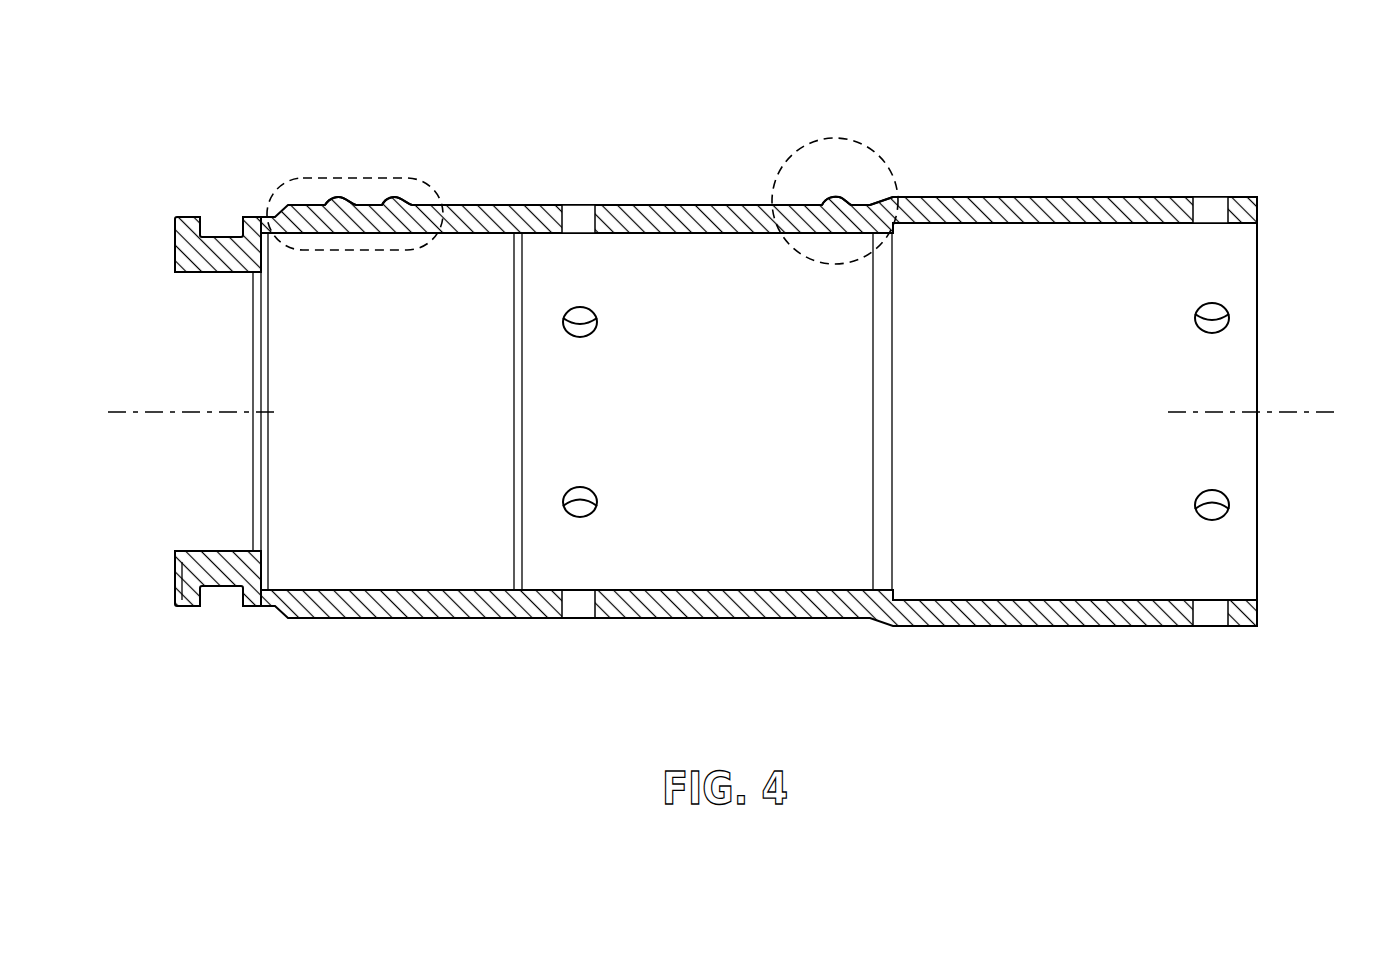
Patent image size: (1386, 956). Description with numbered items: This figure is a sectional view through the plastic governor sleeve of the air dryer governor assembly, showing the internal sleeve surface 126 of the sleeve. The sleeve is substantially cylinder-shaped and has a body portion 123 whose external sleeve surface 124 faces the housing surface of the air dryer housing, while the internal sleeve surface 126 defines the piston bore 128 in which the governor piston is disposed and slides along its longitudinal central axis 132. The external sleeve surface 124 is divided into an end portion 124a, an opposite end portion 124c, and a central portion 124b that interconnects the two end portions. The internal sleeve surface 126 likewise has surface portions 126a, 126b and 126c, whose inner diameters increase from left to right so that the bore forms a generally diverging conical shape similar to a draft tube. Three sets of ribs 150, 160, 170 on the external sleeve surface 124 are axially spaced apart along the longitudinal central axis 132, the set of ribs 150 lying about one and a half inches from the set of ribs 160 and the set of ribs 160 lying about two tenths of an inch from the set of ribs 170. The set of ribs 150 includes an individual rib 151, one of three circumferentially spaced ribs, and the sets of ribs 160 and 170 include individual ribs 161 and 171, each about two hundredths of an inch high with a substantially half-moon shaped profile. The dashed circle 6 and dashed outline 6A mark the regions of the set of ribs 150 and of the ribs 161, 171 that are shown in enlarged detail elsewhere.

The external sleeve surface 124 is at (1118, 195).
The end portion 124a is at (480, 620).
The central portion 124b is at (797, 619).
The opposite end portion 124c is at (1137, 627).
The internal sleeve surface 126 is at (983, 272).
The surface portion 126a is at (372, 585).
The surface portion 126b is at (732, 594).
The surface portion 126c is at (986, 598).
The body portion 123 is at (658, 230).
The piston bore 128 is at (977, 421).
The longitudinal central axis 132 is at (150, 412).
The set of ribs 150 is at (841, 182).
The rib 151 is at (830, 198).
The set of ribs 160 is at (399, 184).
The rib 161 is at (383, 198).
The set of ribs 170 is at (329, 188).
The rib 171 is at (328, 204).
The detail view circle FIG. 6 is at (880, 153).
The detail view outline FIG. 6A is at (440, 186).